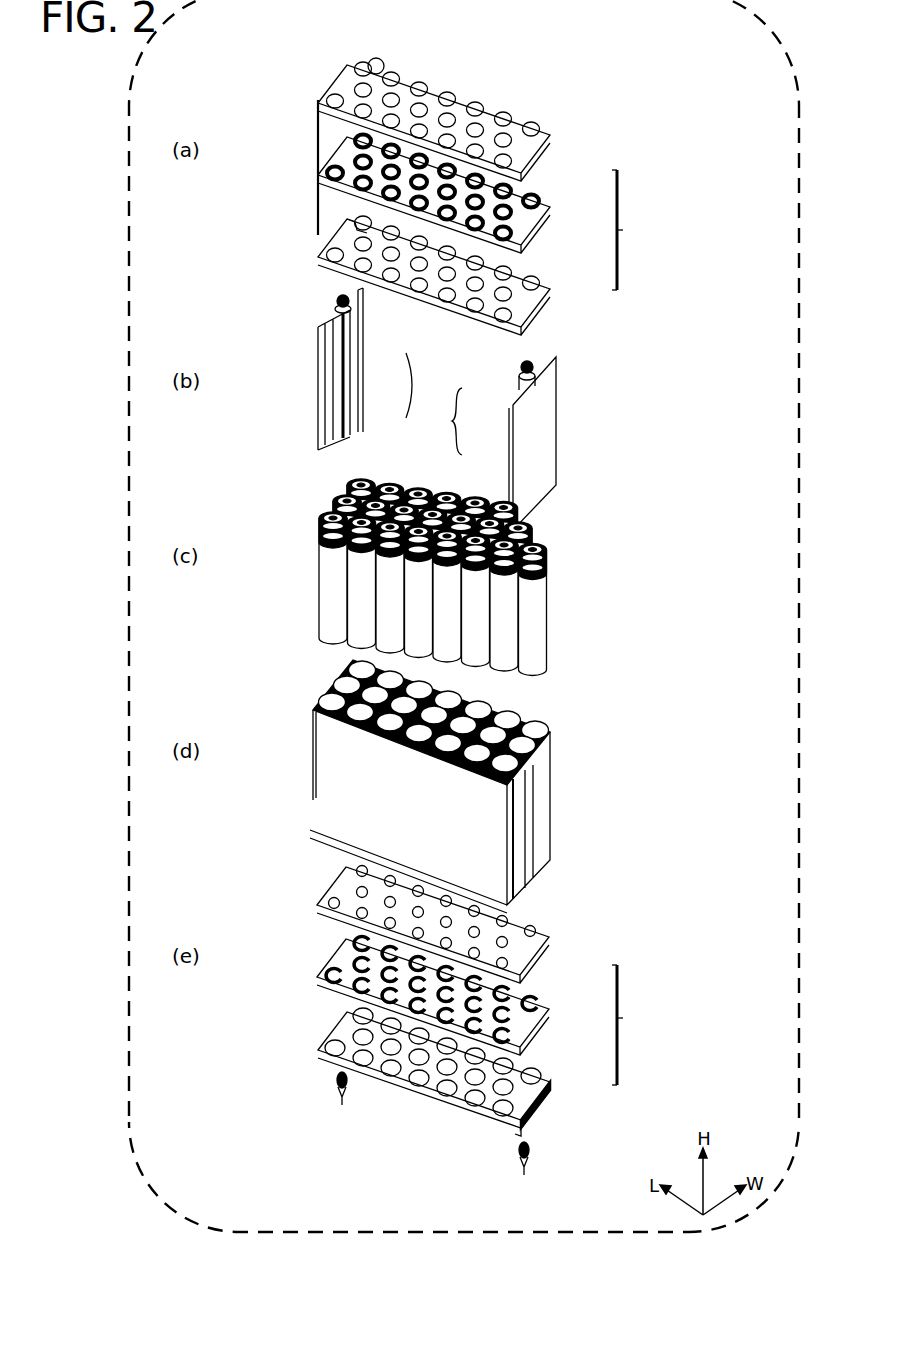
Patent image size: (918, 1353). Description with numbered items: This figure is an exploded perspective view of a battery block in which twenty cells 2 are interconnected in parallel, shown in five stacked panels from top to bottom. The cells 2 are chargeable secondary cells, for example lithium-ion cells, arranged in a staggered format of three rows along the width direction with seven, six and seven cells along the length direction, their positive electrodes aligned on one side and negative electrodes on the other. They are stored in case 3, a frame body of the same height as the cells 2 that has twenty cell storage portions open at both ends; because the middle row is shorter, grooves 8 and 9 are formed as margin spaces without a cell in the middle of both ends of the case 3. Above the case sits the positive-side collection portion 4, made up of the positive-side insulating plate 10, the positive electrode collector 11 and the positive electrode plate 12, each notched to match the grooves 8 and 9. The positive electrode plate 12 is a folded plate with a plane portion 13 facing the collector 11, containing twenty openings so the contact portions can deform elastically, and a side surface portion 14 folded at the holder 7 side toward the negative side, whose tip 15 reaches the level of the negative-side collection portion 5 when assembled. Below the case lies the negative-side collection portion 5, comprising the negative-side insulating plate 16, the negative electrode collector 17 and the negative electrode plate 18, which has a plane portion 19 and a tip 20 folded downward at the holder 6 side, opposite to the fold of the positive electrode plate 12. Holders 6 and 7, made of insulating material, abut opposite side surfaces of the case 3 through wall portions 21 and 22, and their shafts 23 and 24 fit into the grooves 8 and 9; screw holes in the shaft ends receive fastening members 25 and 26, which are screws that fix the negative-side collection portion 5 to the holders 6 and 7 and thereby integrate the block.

The cell 2 is at (538, 620).
The case 3 is at (432, 786).
The positive-side collection portion 4 is at (625, 230).
The negative-side collection portion 5 is at (625, 1025).
The holder 6 is at (449, 421).
The holder 7 is at (418, 385).
The groove 8 is at (527, 758).
The groove 9 is at (334, 692).
The positive-side insulating plate 10 is at (545, 279).
The positive electrode collector 11 is at (545, 205).
The positive electrode plate 12 is at (540, 138).
The plane portion 13 is at (382, 58).
The side surface portion 14 is at (316, 156).
The tip 15 is at (340, 216).
The negative-side insulating plate 16 is at (553, 936).
The negative electrode collector 17 is at (545, 1001).
The negative electrode plate 18 is at (550, 1076).
The plane portion 19 is at (550, 1096).
The tip 20 is at (531, 1123).
The wall portion 21 is at (512, 456).
The wall portion 22 is at (352, 404).
The shaft 23 is at (520, 380).
The shaft 24 is at (356, 356).
The fastening member 25 is at (524, 1175).
The fastening member 26 is at (342, 1105).